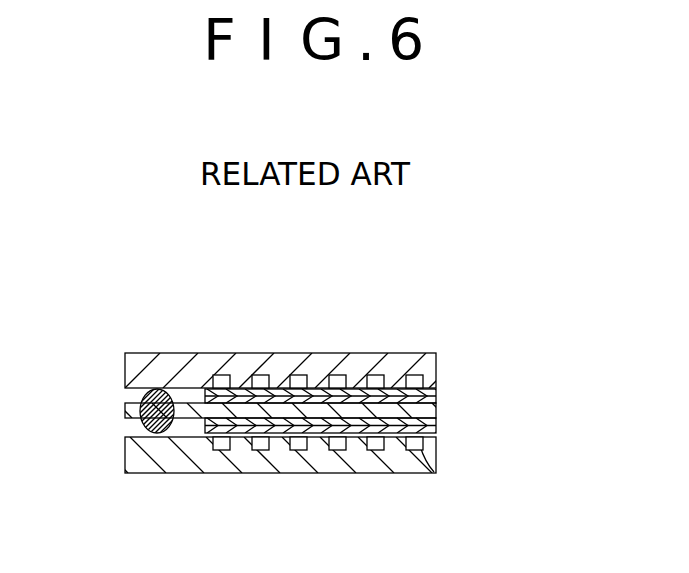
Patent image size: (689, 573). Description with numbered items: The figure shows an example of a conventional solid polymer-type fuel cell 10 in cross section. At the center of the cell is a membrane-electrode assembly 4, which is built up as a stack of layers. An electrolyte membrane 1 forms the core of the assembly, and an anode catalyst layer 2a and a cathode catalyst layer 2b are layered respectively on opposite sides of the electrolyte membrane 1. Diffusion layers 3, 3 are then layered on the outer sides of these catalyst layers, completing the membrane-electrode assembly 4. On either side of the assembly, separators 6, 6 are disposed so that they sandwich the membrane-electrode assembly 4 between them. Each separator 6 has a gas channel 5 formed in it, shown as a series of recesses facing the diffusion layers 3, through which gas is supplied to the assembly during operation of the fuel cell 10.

The solid polymer-type fuel cell 10 is at (125, 327).
The electrolyte membrane 1 is at (420, 413).
The anode catalyst layer 2a is at (427, 425).
The cathode catalyst layer 2b is at (433, 400).
The diffusion layer 3 is at (378, 384).
The membrane-electrode assembly 4 is at (541, 305).
The gas channel 5 is at (262, 377).
The separator 6 is at (323, 369).